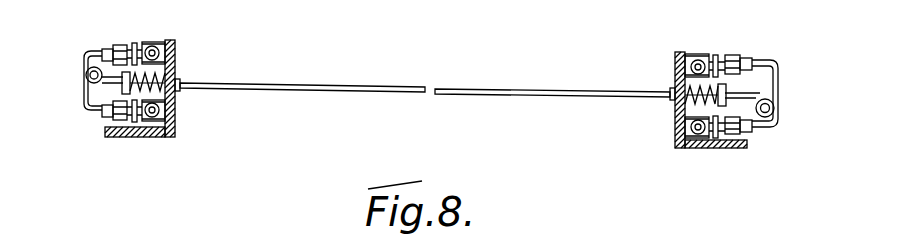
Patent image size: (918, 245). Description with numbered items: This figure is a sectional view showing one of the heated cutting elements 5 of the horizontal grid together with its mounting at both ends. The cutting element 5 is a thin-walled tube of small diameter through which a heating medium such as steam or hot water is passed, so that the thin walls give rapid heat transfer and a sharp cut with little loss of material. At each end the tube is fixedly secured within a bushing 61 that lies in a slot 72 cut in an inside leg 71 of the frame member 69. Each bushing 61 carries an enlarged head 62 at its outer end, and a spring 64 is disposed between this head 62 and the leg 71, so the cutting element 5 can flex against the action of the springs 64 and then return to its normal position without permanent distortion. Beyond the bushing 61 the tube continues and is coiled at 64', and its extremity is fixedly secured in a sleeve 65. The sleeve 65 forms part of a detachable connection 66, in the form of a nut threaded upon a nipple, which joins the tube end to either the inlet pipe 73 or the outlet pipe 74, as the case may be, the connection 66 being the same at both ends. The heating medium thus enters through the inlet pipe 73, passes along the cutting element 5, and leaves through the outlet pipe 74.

The cutting element 5 is at (372, 87).
The bushing 61 is at (181, 92).
The enlarged head 62 is at (122, 86).
The spring 64 is at (424, 75).
The coil 64' is at (431, 85).
The sleeve 65 is at (108, 113).
The detachable connection 66 is at (108, 48).
The frame member 69 is at (118, 135).
The inside leg 71 is at (177, 127).
The slot 72 is at (178, 66).
The inlet pipe 73 is at (153, 46).
The outlet pipe 74 is at (152, 121).